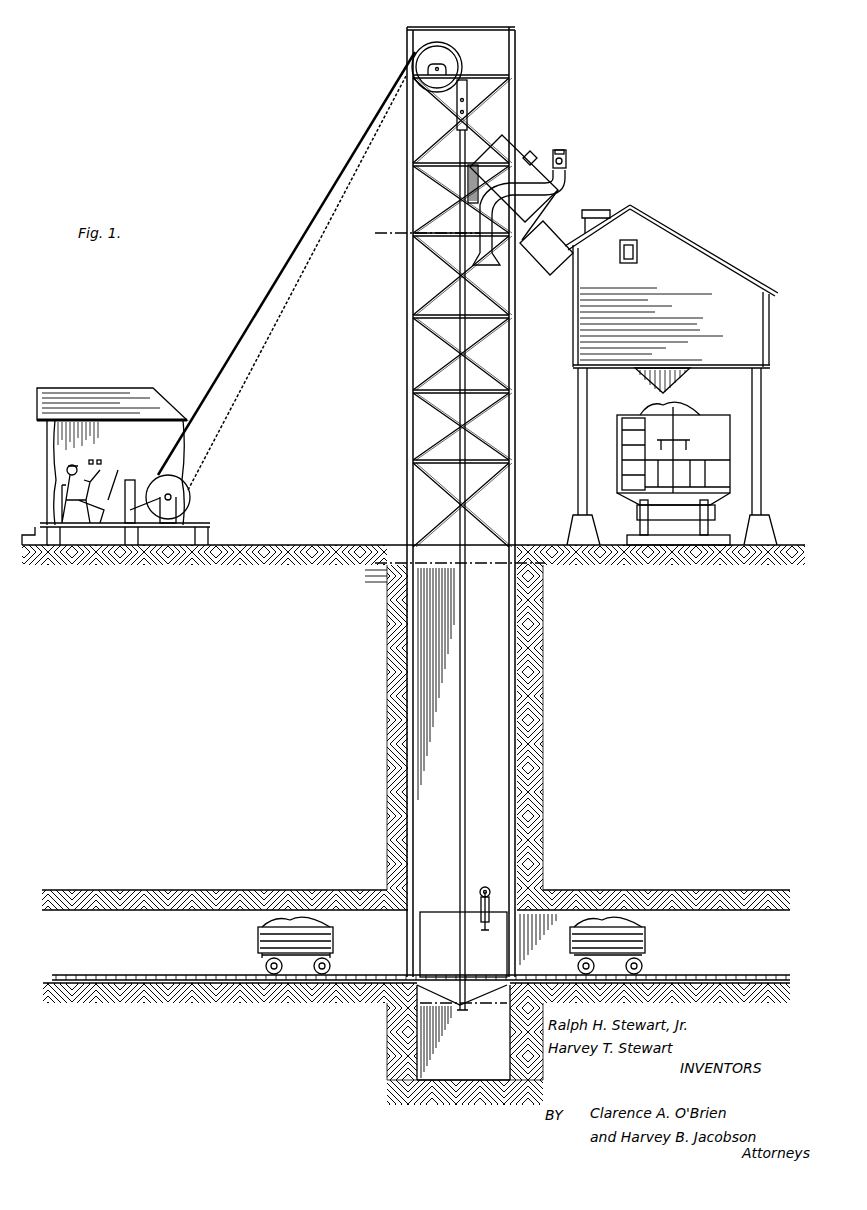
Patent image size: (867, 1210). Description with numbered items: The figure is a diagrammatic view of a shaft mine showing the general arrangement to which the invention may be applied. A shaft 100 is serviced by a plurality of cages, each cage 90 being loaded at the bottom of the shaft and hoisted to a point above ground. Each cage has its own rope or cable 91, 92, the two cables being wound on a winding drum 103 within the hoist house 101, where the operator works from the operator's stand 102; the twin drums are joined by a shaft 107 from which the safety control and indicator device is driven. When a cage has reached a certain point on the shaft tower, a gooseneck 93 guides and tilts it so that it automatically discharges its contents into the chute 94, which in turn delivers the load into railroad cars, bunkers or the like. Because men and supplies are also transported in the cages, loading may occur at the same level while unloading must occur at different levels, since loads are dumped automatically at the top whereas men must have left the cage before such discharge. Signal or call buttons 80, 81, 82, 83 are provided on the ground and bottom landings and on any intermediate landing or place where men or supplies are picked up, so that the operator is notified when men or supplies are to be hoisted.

The signal or call button 80 is at (409, 944).
The signal or call button 81 is at (414, 957).
The signal or call button 82 is at (405, 523).
The signal or call button 83 is at (405, 524).
The cage 90 is at (441, 920).
The rope or cable 91 is at (273, 324).
The rope or cable 92 is at (250, 322).
The gooseneck 93 is at (553, 178).
The chute 94 is at (560, 270).
The shaft 100 is at (522, 746).
The hoist house 101 is at (117, 396).
The operator's stand 102 is at (117, 463).
The winding drum 103 is at (182, 497).
The shaft 107 is at (160, 485).